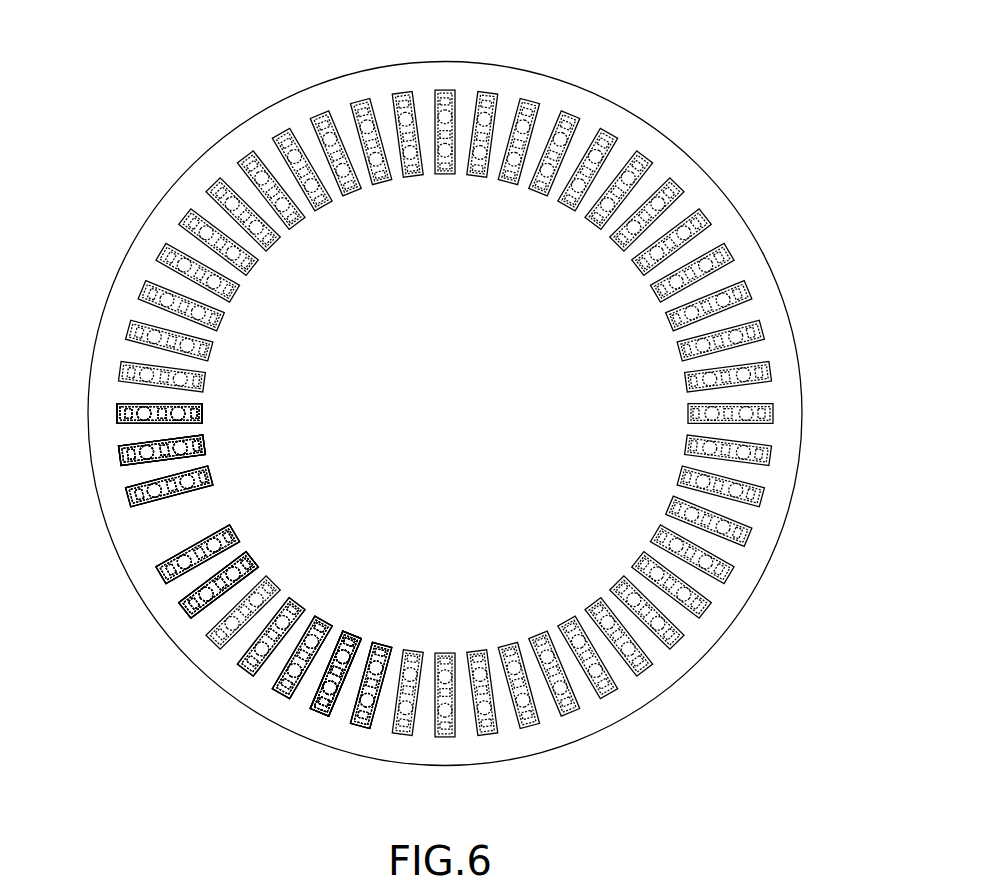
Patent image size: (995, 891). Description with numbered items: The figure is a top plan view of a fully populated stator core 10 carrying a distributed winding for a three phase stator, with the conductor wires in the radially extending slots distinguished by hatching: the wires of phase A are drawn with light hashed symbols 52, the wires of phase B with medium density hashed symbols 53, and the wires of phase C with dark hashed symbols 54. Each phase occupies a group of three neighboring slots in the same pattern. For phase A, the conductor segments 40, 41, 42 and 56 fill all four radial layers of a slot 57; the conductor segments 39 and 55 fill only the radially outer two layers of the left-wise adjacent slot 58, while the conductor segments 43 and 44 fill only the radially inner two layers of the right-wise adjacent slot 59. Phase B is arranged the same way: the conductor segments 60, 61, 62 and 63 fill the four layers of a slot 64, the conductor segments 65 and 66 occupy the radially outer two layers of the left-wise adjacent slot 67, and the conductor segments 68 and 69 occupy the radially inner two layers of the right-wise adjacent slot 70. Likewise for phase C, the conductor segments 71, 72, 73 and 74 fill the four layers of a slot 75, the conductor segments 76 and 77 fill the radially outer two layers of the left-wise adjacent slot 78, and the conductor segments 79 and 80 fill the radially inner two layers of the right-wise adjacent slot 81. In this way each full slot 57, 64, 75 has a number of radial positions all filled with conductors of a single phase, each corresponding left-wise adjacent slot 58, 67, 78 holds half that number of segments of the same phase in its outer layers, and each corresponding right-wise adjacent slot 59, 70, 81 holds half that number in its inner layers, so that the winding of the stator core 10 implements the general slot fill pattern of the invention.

The stator core 10 is at (188, 167).
The phase A conductor segment 39 is at (158, 497).
The phase A conductor segment 40 is at (146, 448).
The phase A conductor segment 41 is at (205, 426).
The phase A conductor segment 42 is at (200, 446).
The phase A conductor segment 43 is at (170, 412).
The phase A conductor segment 44 is at (205, 410).
The light hashed symbols 52 is at (358, 107).
The medium density hashed symbols 53 is at (447, 100).
The dark hashed symbols 54 is at (287, 137).
The phase A conductor segment 55 is at (130, 490).
The phase A conductor segment 56 is at (130, 457).
The slot 57 is at (207, 454).
The left-wise adjacent slot 58 is at (210, 478).
The right-wise adjacent slot 59 is at (200, 420).
The phase B conductor segment 60 is at (240, 605).
The phase B conductor segment 61 is at (205, 595).
The phase B conductor segment 62 is at (247, 570).
The phase B conductor segment 63 is at (237, 573).
The slot 64 is at (247, 572).
The phase B conductor segment 65 is at (243, 637).
The phase B conductor segment 66 is at (255, 645).
The left-wise adjacent slot 67 is at (320, 615).
The phase B conductor segment 68 is at (212, 540).
The phase B conductor segment 69 is at (228, 540).
The right-wise adjacent slot 70 is at (230, 557).
The phase C conductor segment 71 is at (320, 728).
The phase C conductor segment 72 is at (317, 690).
The phase C conductor segment 73 is at (343, 648).
The phase C conductor segment 74 is at (353, 650).
The slot 75 is at (348, 648).
The phase C conductor segment 76 is at (373, 712).
The phase C conductor segment 77 is at (383, 710).
The left-wise adjacent slot 78 is at (377, 657).
The phase C conductor segment 79 is at (310, 640).
The phase C conductor segment 80 is at (320, 637).
The right-wise adjacent slot 81 is at (337, 635).